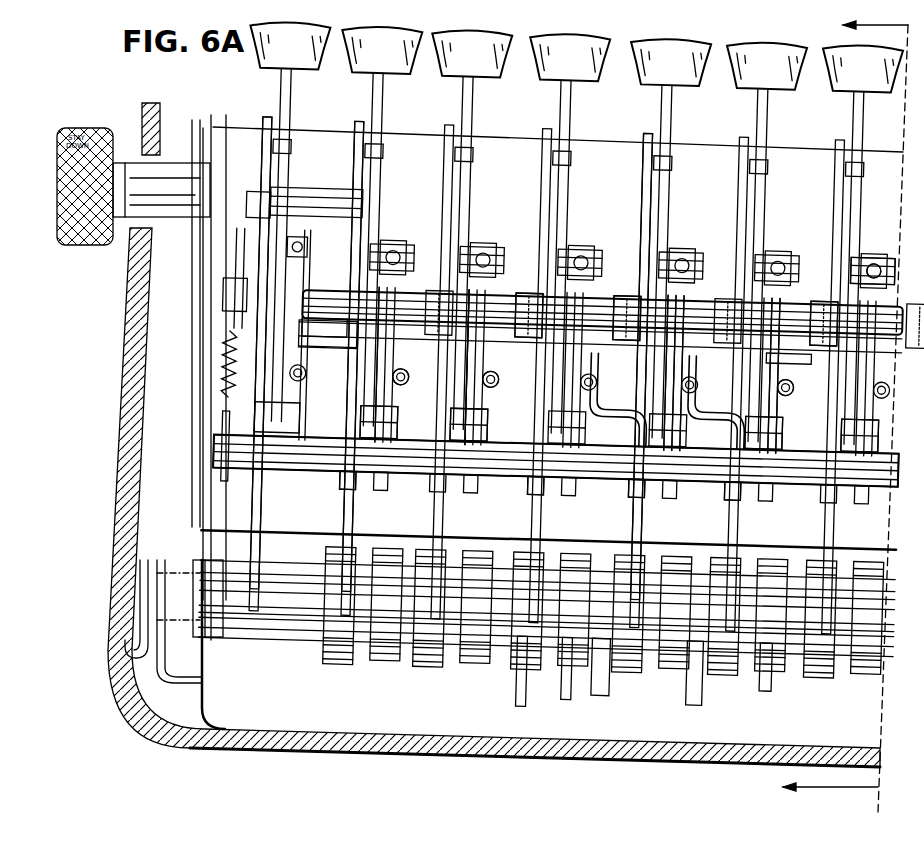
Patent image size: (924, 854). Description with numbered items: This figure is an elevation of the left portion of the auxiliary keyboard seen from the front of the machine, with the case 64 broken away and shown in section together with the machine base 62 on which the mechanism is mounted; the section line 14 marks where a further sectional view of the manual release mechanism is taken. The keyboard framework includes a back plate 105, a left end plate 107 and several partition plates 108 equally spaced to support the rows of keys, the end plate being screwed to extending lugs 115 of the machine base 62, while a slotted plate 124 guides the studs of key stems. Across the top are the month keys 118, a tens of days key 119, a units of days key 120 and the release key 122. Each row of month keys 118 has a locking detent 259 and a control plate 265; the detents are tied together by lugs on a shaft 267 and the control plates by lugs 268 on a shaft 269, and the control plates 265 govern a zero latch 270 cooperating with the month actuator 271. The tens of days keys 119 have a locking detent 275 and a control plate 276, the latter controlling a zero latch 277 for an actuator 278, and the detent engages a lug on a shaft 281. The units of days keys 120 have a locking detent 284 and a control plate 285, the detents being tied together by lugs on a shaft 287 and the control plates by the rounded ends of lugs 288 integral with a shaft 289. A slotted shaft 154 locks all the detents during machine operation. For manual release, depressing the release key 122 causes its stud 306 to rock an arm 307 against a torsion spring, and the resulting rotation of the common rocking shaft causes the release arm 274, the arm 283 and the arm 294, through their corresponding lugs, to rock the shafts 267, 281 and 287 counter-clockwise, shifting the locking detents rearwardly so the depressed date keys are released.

The section line 14— 14 is at (845, 415).
The machine base 62 is at (558, 760).
The case 64 is at (128, 340).
The back plate 105 is at (722, 152).
The left end plate 107 is at (218, 120).
The partition plates 108 is at (365, 122).
The extending lugs 115 is at (202, 682).
The month keys 118 is at (452, 30).
The tens of days keys 119 is at (646, 40).
The units of days keys 120 is at (736, 44).
The release key 122 is at (862, 52).
The plate 124 is at (442, 510).
The shaft 154 is at (313, 337).
The locking detent 259 is at (548, 378).
The control plate 265 is at (540, 414).
The shaft 267 is at (505, 312).
The lugs 268 is at (545, 437).
The shaft 269 is at (518, 475).
The zero latch 270 is at (620, 408).
The month actuator 271 is at (590, 487).
The release arm 274 is at (540, 355).
The locking detent 275 is at (690, 380).
The control plate 276 is at (680, 380).
The zero latch 277 is at (722, 412).
The actuator 278 is at (693, 490).
The shaft 281 is at (688, 325).
The arm 283 is at (620, 300).
The locking detent 284 is at (780, 384).
The control plate 285 is at (775, 366).
The shaft 287 is at (800, 320).
The lugs 288 is at (840, 438).
The shaft 289 is at (775, 495).
The arm 294 is at (820, 395).
The stud 306 is at (879, 254).
The arm 307 is at (898, 248).